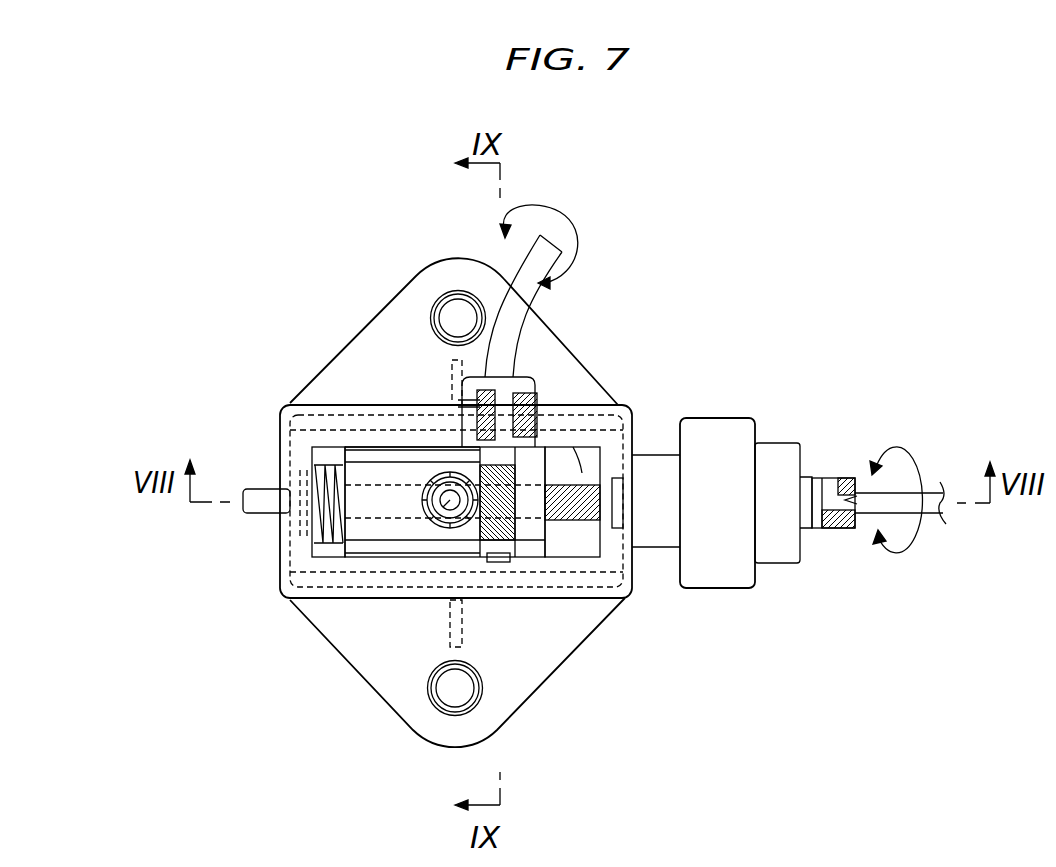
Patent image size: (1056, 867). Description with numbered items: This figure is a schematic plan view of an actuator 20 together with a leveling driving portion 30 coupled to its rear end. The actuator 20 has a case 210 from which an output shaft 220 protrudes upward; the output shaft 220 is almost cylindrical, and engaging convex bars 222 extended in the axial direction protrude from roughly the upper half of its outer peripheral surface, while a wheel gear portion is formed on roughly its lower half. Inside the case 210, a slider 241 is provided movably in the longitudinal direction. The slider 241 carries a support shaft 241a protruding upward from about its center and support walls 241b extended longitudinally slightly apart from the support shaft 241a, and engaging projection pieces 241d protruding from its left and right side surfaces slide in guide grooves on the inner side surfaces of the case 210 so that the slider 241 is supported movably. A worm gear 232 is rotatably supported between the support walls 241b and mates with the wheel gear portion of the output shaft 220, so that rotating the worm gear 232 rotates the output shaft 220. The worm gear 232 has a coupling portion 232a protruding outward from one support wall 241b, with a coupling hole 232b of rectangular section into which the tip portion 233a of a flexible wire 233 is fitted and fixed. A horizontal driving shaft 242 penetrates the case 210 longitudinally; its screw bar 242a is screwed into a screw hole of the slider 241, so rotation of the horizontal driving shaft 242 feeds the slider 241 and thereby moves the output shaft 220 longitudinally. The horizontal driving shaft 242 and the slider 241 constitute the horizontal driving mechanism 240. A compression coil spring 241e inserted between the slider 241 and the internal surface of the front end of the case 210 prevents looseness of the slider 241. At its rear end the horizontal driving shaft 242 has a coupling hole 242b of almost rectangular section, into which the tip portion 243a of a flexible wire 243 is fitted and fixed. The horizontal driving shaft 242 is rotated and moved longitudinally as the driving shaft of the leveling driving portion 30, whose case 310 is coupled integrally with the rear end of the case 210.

The actuator 20 is at (283, 217).
The case 210 is at (600, 407).
The output shaft 220 is at (450, 540).
The engaging convex bars 222 is at (383, 453).
The worm gear 232 is at (535, 537).
The coupling portion 232a is at (548, 400).
The coupling hole 232b is at (430, 473).
The flexible wire 233 is at (550, 240).
The tip portion 233a is at (525, 375).
The horizontal driving mechanism 240 is at (706, 650).
The slider 241 is at (555, 540).
The support shaft 241a is at (425, 522).
The support walls 241b is at (395, 465).
The engaging projection pieces 241d is at (427, 403).
The compression coil spring 241e is at (330, 568).
The horizontal driving shaft 242 is at (577, 530).
The screw bar 242a is at (575, 470).
The coupling hole 242b is at (862, 488).
The flexible wire 243 is at (900, 503).
The tip portion 243a is at (833, 528).
The leveling driving portion 30 is at (720, 440).
The case 310 is at (727, 567).